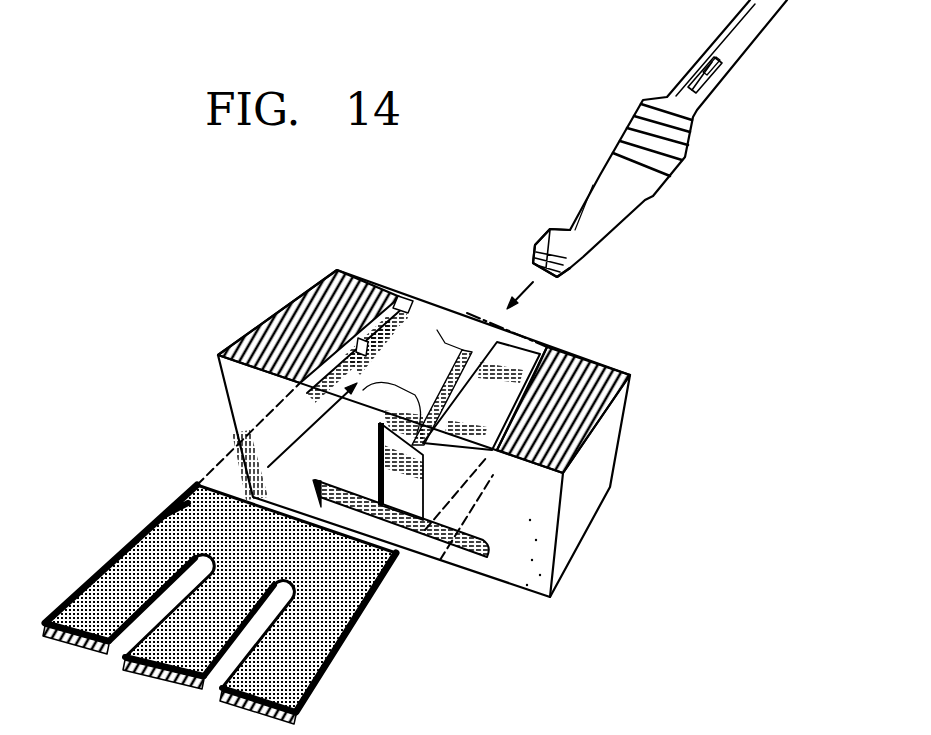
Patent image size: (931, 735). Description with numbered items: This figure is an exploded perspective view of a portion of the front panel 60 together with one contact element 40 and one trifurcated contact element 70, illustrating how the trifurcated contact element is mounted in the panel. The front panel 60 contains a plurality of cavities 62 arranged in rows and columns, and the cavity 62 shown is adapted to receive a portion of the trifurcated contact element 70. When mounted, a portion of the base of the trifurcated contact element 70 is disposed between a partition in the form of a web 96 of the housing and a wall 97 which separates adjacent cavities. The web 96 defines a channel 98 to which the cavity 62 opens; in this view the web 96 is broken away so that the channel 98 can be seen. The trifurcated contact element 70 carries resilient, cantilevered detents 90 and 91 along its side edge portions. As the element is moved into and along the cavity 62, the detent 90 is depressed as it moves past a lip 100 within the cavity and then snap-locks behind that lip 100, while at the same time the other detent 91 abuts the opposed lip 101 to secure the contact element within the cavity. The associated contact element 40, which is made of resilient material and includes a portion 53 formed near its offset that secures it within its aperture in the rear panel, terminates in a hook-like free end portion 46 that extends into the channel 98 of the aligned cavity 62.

The contact element 40 is at (740, 50).
The free end portion 46 is at (567, 227).
The portion of the contact element 53 is at (627, 143).
The front panel 60 is at (585, 497).
The cavity 62 is at (416, 302).
The trifurcated contact element 70 is at (77, 583).
The detent 90 is at (168, 505).
The detent 91 is at (360, 653).
The web 96 is at (457, 333).
The wall 97 is at (453, 560).
The channel 98 is at (465, 388).
The lip 100 is at (372, 305).
The lip 101 is at (540, 347).